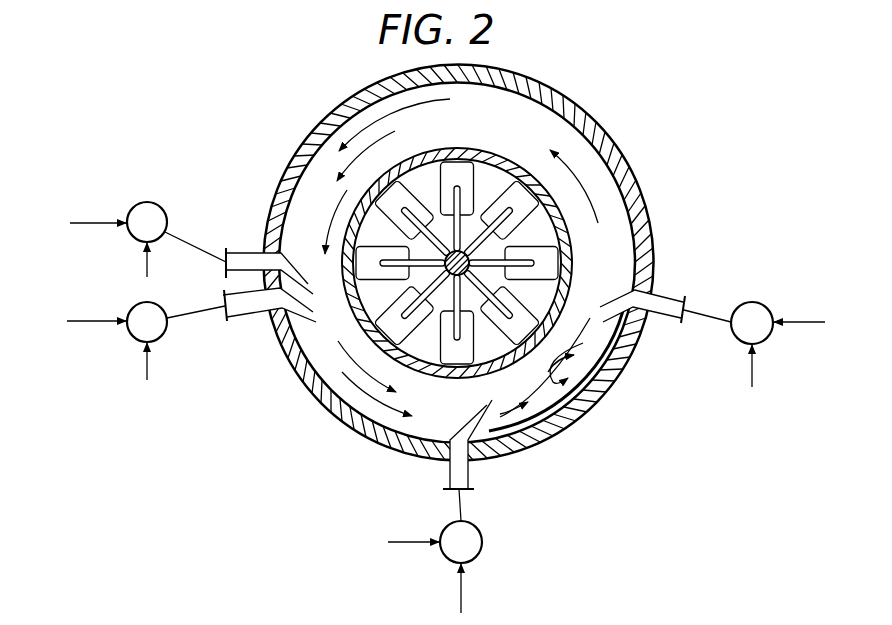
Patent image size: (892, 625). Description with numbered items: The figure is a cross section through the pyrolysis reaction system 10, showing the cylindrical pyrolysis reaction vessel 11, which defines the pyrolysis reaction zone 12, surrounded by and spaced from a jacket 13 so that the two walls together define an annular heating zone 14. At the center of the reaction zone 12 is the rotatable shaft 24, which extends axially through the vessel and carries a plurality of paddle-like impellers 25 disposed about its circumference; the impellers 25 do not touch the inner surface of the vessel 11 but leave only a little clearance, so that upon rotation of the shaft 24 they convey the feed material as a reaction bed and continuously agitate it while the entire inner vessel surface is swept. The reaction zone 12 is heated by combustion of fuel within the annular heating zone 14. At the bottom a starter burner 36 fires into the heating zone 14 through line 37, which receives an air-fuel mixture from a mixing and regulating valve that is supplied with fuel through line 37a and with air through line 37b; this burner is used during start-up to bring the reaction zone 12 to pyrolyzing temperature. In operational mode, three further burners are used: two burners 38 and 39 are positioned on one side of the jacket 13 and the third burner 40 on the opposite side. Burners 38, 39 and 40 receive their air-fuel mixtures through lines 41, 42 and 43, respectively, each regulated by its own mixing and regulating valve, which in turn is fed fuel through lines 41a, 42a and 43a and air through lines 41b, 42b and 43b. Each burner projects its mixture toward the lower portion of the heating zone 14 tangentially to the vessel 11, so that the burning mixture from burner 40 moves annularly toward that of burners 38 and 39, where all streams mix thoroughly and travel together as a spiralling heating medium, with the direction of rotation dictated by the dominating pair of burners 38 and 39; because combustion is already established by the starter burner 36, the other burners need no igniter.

The pyrolysis reaction system 10 is at (459, 259).
The pyrolysis reaction vessel 11 is at (519, 167).
The pyrolysis reaction zone 12 is at (546, 243).
The jacket 13 is at (608, 151).
The annular heating zone 14 is at (486, 131).
The rotatable shaft 24 is at (440, 272).
The paddle-like impellers 25 is at (557, 277).
The starter burner 36 is at (470, 470).
The line 37 is at (458, 500).
The fuel line 37a is at (411, 545).
The air line 37b is at (466, 593).
The burner 38 is at (249, 310).
The burner 39 is at (240, 253).
The burner 40 is at (665, 303).
The line 41 is at (193, 317).
The fuel line 41a is at (82, 320).
The air line 41b is at (146, 360).
The line 42 is at (193, 242).
The fuel line 42a is at (90, 222).
The air line 42b is at (146, 267).
The line 43 is at (712, 310).
The fuel line 43a is at (805, 323).
The air line 43b is at (751, 378).